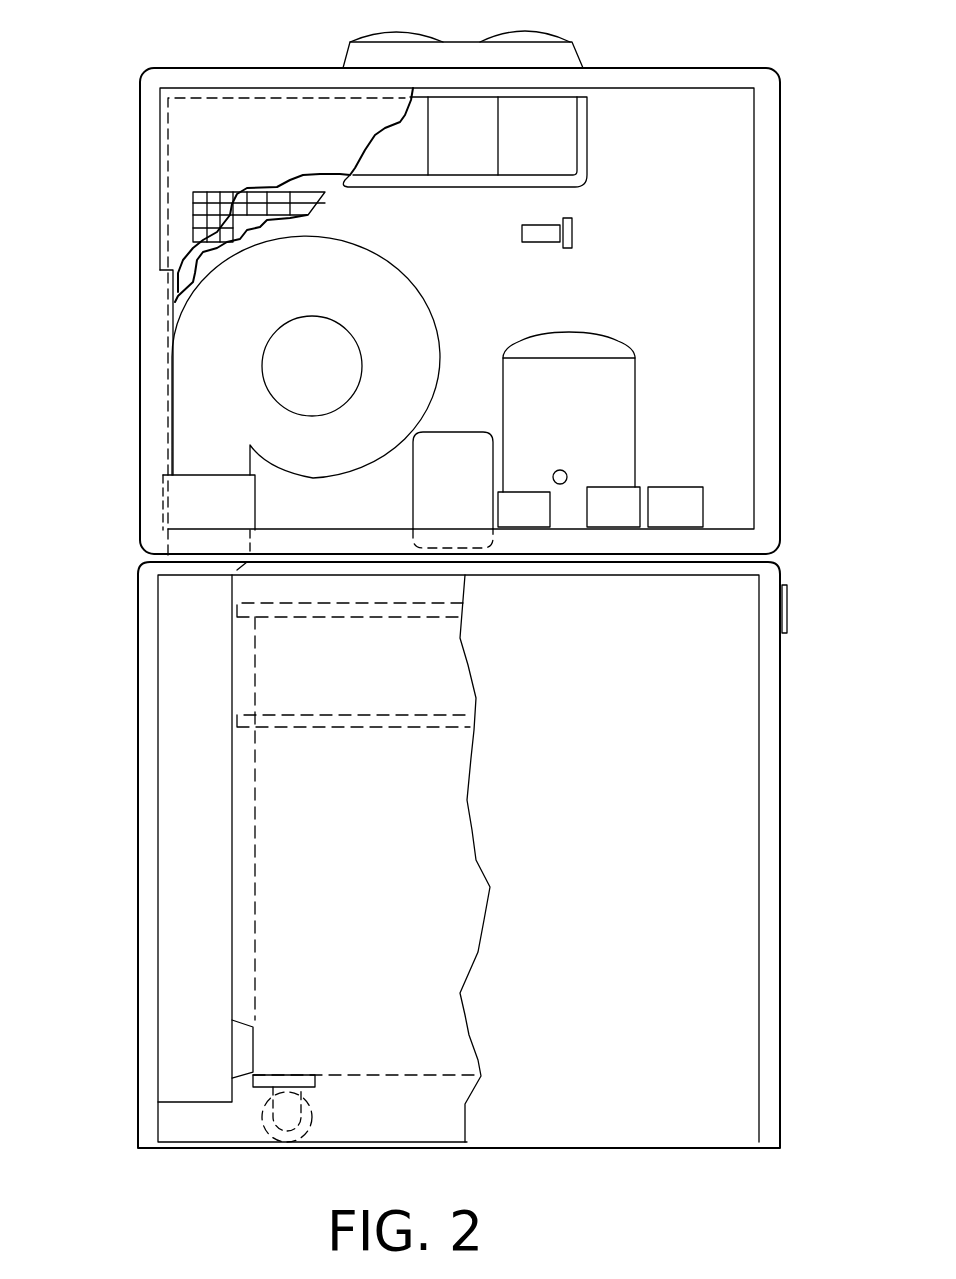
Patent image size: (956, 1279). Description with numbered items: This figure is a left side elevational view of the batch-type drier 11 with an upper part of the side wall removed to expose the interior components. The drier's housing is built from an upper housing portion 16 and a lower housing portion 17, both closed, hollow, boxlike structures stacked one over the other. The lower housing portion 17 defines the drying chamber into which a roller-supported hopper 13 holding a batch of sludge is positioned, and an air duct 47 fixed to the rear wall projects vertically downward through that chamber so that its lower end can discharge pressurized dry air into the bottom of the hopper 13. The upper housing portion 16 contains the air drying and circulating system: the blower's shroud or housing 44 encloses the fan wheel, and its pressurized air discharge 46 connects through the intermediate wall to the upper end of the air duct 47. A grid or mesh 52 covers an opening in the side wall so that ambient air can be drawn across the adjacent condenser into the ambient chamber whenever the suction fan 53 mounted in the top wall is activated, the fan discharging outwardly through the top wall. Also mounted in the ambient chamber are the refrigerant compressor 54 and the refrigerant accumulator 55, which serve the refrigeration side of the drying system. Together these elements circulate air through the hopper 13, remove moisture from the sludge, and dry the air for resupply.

The batch-type drier 11 is at (126, 58).
The roller-supported hopper 13 is at (412, 749).
The upper housing portion 16 is at (790, 268).
The lower housing portion 17 is at (790, 766).
The shroud or housing 44 is at (397, 302).
The pressurized air discharge 46 is at (203, 505).
The air duct 47 is at (202, 770).
The grid or mesh 52 is at (205, 215).
The suction fan 53 is at (543, 123).
The compressor 54 is at (625, 412).
The accumulator 55 is at (462, 450).